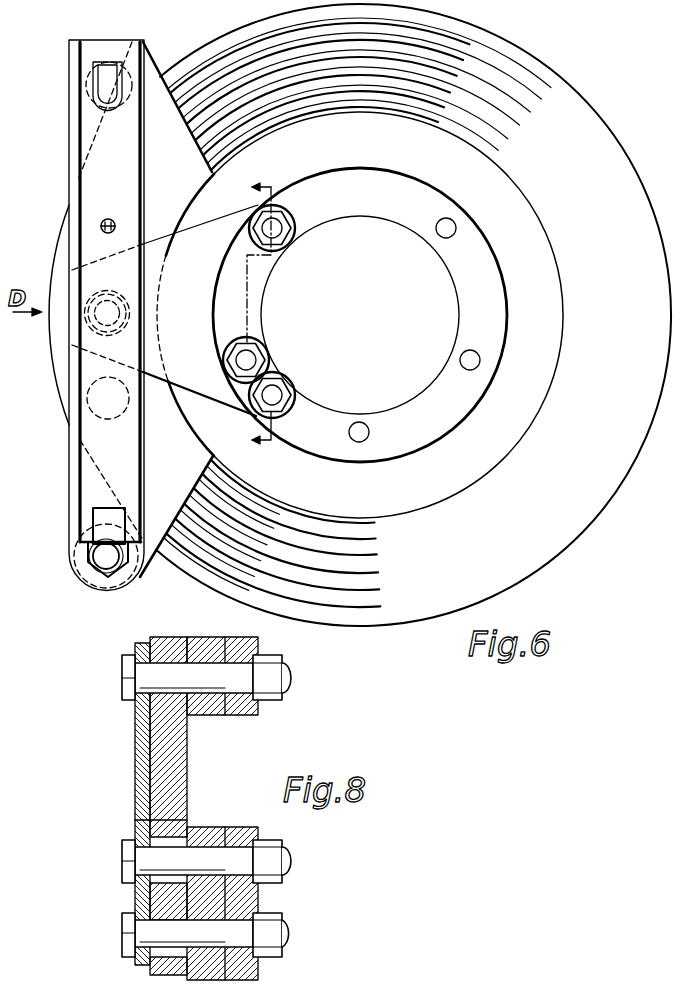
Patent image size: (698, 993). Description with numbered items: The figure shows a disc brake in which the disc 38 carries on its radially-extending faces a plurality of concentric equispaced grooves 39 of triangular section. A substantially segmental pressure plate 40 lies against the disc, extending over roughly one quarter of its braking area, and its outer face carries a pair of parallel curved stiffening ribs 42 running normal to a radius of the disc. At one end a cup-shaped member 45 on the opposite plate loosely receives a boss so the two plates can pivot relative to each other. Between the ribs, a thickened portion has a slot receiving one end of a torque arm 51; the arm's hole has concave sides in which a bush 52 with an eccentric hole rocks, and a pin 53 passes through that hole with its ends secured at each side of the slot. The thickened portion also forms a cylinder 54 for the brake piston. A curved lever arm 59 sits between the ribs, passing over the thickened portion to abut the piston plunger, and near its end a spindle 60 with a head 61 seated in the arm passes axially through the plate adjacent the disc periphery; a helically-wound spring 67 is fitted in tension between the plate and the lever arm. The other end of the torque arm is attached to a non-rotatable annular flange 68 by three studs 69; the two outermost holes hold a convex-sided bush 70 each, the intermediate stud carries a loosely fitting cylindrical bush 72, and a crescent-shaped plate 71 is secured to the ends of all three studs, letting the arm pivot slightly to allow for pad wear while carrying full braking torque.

In FIG. 6, the disc 38 is at (572, 108).
In FIG. 6, the grooves 39 is at (280, 112).
In FIG. 6, the pressure plate 40 is at (66, 125).
In FIG. 6, the stiffening ribs 42 is at (75, 59).
In FIG. 6, the cup-shaped member 45 is at (132, 580).
In FIG. 6, the torque arm 51 is at (208, 231).
In FIG. 8, the torque arm 51 is at (175, 777).
In FIG. 6, the bush 52 is at (90, 290).
In FIG. 6, the pin 53 is at (80, 330).
In FIG. 6, the cylinder 54 is at (113, 419).
In FIG. 6, the curved lever arm 59 is at (100, 168).
In FIG. 6, the spindle 60 is at (128, 58).
In FIG. 6, the head 61 is at (105, 68).
In FIG. 6, the helically-wound spring 67 is at (108, 219).
In FIG. 6, the annular flange 68 is at (462, 302).
In FIG. 8, the annular flange 68 is at (250, 963).
In FIG. 6, the studs 69 is at (278, 230).
In FIG. 8, the studs 69 is at (262, 702).
In FIG. 8, the convex-sided bush 70 is at (134, 700).
In FIG. 6, the crescent-shaped plate 71 is at (262, 293).
In FIG. 8, the crescent-shaped plate 71 is at (145, 777).
In FIG. 8, the cylindrical bush 72 is at (140, 838).